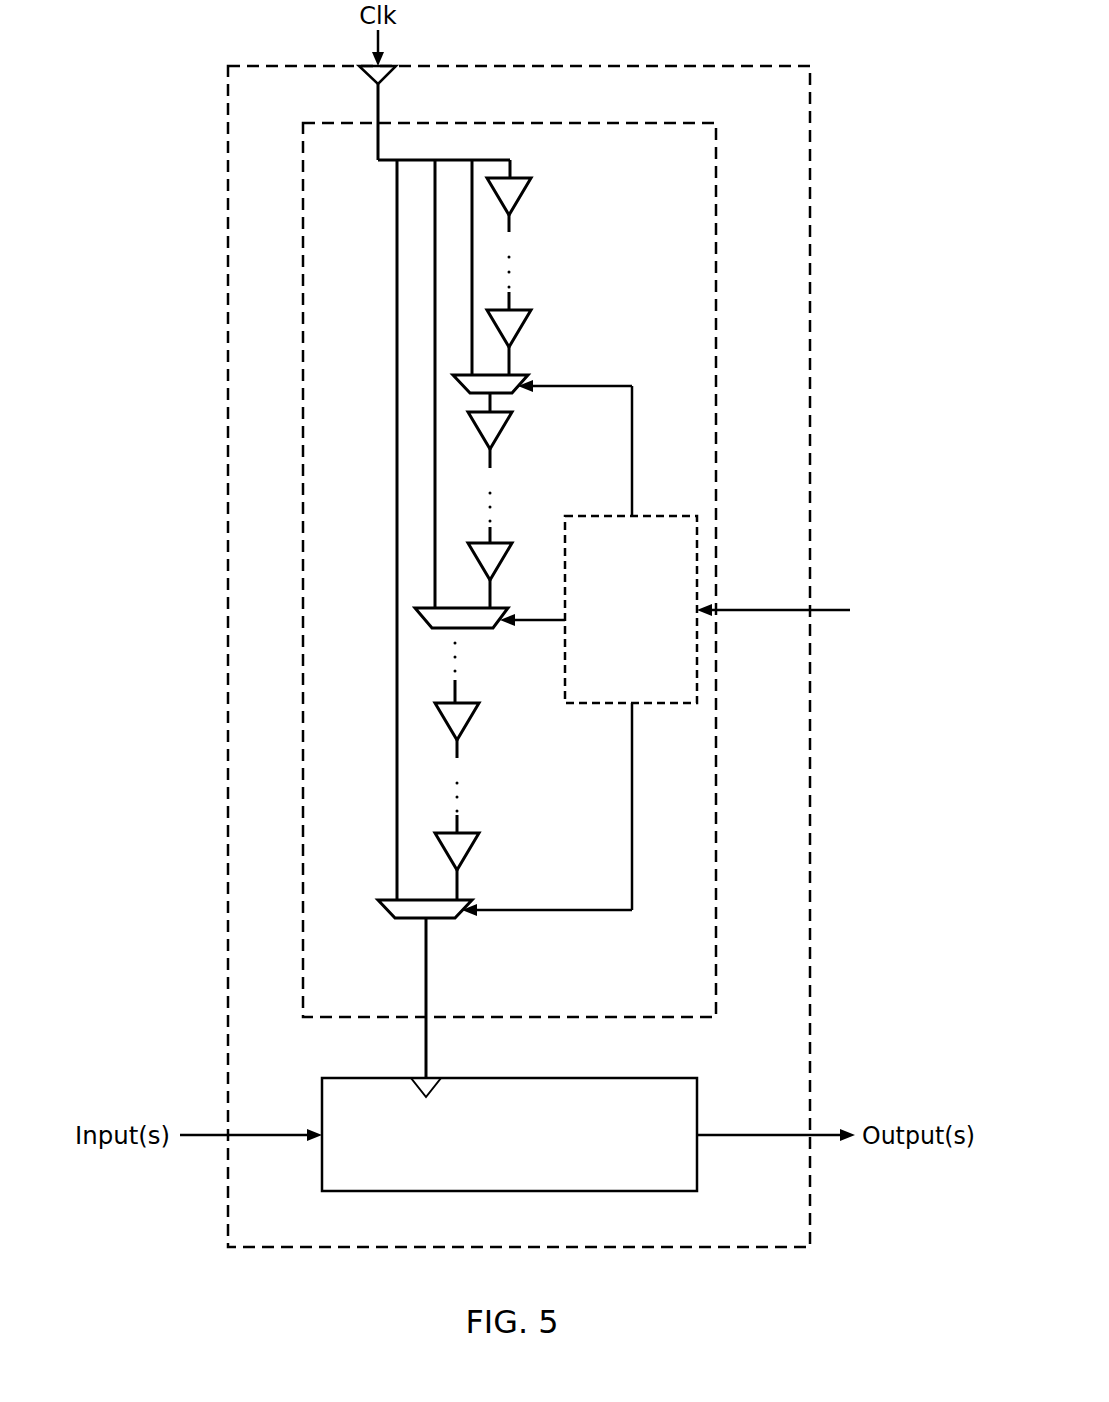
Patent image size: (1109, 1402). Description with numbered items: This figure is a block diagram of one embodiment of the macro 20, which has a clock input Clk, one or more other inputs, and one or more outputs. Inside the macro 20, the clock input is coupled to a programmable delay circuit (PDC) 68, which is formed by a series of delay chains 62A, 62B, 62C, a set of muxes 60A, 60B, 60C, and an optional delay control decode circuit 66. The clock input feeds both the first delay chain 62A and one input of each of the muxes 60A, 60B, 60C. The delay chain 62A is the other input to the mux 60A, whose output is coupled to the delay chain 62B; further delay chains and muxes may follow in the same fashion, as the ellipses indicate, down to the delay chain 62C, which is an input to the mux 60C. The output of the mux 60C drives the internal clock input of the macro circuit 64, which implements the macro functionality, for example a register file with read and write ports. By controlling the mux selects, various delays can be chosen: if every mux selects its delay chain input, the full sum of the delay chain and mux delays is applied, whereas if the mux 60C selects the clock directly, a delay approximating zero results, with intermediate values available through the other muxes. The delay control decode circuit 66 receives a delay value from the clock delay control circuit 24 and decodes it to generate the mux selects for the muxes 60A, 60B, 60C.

The macro 20 is at (773, 140).
The programmable delay circuit (PDC) 68 is at (680, 196).
The delay chain 62A is at (537, 160).
The delay chain 62B is at (505, 400).
The delay chain 62C is at (478, 692).
The mux 60A is at (520, 375).
The mux 60B is at (497, 614).
The mux 60C is at (453, 922).
The delay control decode circuit 66 is at (617, 676).
The macro circuit 64 is at (610, 1149).
The clock delay control circuit 24 is at (821, 610).